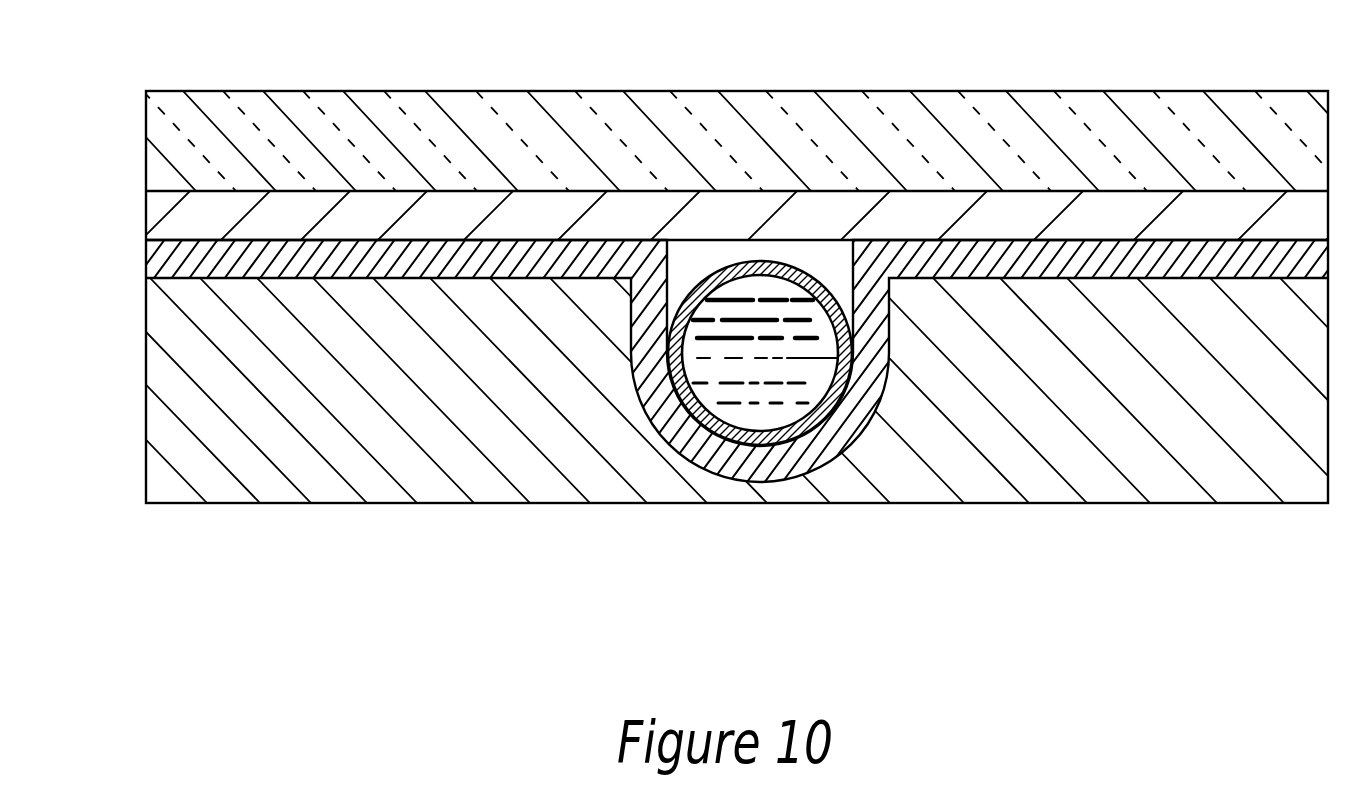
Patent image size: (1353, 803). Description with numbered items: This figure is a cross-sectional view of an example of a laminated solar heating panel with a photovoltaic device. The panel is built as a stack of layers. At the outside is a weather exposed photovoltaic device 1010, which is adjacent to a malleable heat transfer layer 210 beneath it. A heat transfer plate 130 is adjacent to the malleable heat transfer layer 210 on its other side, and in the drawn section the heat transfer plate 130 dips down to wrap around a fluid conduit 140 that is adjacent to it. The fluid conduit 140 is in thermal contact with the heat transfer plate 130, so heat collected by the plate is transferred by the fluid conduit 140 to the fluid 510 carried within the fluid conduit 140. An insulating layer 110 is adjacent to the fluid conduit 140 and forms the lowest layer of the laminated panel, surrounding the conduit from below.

The weather exposed photovoltaic device 1010 is at (187, 113).
The malleable heat transfer layer 210 is at (182, 212).
The heat transfer plate 130 is at (173, 257).
The insulating layer 110 is at (173, 370).
The fluid conduit 140 is at (785, 257).
The fluid 510 is at (738, 288).